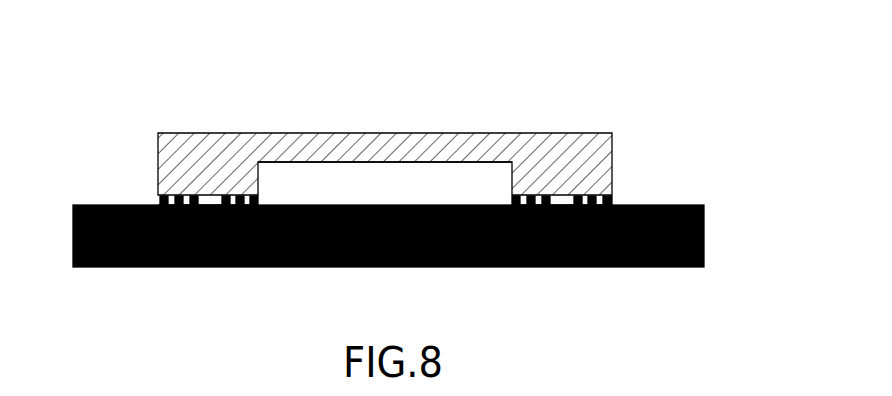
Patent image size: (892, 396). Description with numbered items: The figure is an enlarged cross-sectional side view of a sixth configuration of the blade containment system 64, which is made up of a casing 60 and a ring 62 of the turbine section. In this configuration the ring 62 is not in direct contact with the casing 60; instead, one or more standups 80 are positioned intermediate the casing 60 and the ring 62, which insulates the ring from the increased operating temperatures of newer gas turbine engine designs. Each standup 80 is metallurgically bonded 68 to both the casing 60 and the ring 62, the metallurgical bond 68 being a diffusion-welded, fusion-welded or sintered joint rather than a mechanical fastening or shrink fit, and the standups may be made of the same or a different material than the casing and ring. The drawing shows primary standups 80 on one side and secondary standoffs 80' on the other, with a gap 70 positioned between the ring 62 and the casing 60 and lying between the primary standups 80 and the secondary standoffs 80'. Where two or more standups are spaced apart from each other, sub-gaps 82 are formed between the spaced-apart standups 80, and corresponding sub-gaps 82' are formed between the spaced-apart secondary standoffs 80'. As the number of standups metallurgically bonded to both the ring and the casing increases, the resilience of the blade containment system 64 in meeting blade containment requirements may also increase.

The casing 60 is at (704, 235).
The ring 62 is at (612, 163).
The blade containment system 64 is at (376, 79).
The metallurgical bond 68 is at (158, 203).
The gap 70 is at (428, 183).
The standup 80 is at (240, 257).
The secondary standoff 80' is at (580, 256).
The sub-gap 82 is at (210, 138).
The sub-gap 82' is at (572, 138).